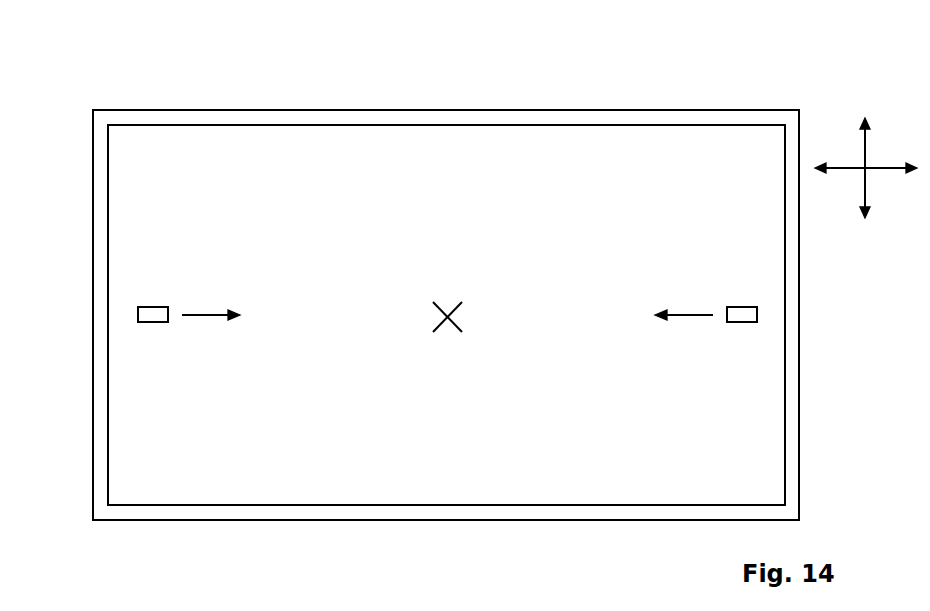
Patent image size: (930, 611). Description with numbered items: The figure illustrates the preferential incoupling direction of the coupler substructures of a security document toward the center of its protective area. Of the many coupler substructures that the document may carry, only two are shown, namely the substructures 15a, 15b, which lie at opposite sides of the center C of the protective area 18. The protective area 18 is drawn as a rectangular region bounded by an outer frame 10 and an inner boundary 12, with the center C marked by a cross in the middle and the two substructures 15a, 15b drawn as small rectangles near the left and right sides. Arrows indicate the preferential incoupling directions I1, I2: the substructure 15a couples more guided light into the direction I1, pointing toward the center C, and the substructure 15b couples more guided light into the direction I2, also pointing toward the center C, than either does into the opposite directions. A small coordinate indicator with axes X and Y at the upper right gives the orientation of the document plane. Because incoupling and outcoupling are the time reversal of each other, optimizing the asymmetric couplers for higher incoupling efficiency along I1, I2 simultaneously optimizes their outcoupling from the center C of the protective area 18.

The substrate / display panel 10 is at (446, 287).
The active area boundary 12 is at (446, 283).
The protective area 18 is at (446, 83).
The coupler substructure 15a is at (97, 345).
The coupler substructure 15b is at (810, 345).
The preferential incoupling direction I1 is at (211, 301).
The preferential incoupling direction I2 is at (684, 301).
The center of protective area C is at (472, 368).
The X axis X is at (867, 153).
The Y axis Y is at (856, 162).